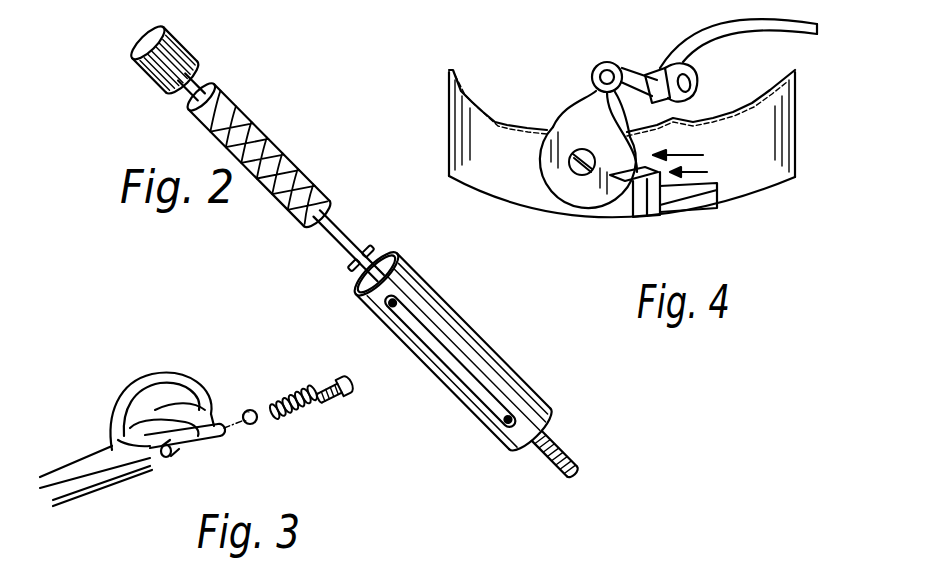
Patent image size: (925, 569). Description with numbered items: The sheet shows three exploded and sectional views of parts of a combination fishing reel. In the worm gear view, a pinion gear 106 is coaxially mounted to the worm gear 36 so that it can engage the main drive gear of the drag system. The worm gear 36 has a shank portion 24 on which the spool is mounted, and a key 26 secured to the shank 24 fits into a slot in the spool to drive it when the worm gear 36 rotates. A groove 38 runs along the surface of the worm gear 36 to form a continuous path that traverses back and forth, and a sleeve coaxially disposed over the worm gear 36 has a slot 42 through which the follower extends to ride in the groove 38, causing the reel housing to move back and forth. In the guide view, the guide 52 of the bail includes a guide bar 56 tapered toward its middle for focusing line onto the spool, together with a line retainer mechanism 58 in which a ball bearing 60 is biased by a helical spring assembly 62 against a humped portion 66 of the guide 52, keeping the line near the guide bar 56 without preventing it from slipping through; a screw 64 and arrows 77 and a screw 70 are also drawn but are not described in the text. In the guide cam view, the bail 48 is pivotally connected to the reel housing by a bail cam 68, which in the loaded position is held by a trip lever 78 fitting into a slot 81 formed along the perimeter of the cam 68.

In FIG. 2, the pinion gear 106 is at (183, 43).
In FIG. 2, the groove 38 is at (230, 100).
In FIG. 2, the worm gear 36 is at (275, 163).
In FIG. 2, the shank portion 24 is at (343, 223).
In FIG. 2, the key 26 is at (368, 238).
In FIG. 2, the slot 42 is at (455, 363).
In FIG. 4, the bail 48 is at (745, 30).
In FIG. 4, the bail cam 68 is at (583, 196).
In FIG. 4, the screw 70 is at (575, 170).
In FIG. 4, the direction arrows 77 is at (694, 166).
In FIG. 4, the trip lever 78 is at (643, 217).
In FIG. 4, the slot 81 is at (620, 167).
In FIG. 3, the guide 52 is at (114, 391).
In FIG. 3, the guide bar 56 is at (120, 429).
In FIG. 3, the line retainer mechanism 58 is at (217, 463).
In FIG. 3, the ball bearing 60 is at (257, 425).
In FIG. 3, the helical spring assembly 62 is at (298, 410).
In FIG. 3, the screw 64 is at (340, 400).
In FIG. 3, the humped portion 66 is at (153, 458).